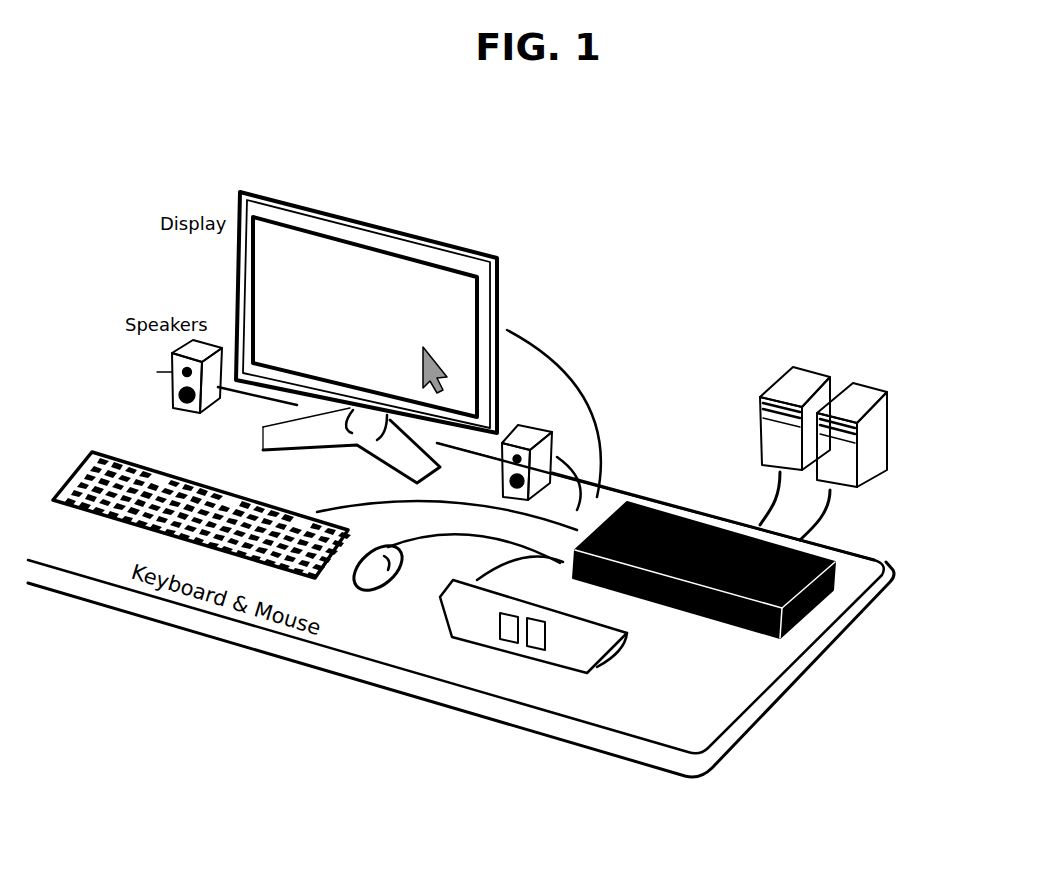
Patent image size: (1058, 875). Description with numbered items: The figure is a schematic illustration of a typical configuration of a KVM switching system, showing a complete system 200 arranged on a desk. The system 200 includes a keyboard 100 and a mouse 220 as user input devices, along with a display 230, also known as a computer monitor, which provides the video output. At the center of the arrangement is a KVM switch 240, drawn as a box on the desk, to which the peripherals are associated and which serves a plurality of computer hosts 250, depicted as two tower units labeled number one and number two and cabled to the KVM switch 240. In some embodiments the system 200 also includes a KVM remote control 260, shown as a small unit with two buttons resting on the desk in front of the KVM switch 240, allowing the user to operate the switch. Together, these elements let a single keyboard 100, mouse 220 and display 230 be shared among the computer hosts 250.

The keyboard 100 is at (85, 442).
The system 200 is at (654, 231).
The mouse 220 is at (381, 600).
The display 230 is at (363, 208).
The KVM switch 240 is at (824, 610).
The computer hosts 250 is at (866, 370).
The KVM remote control 260 is at (597, 682).